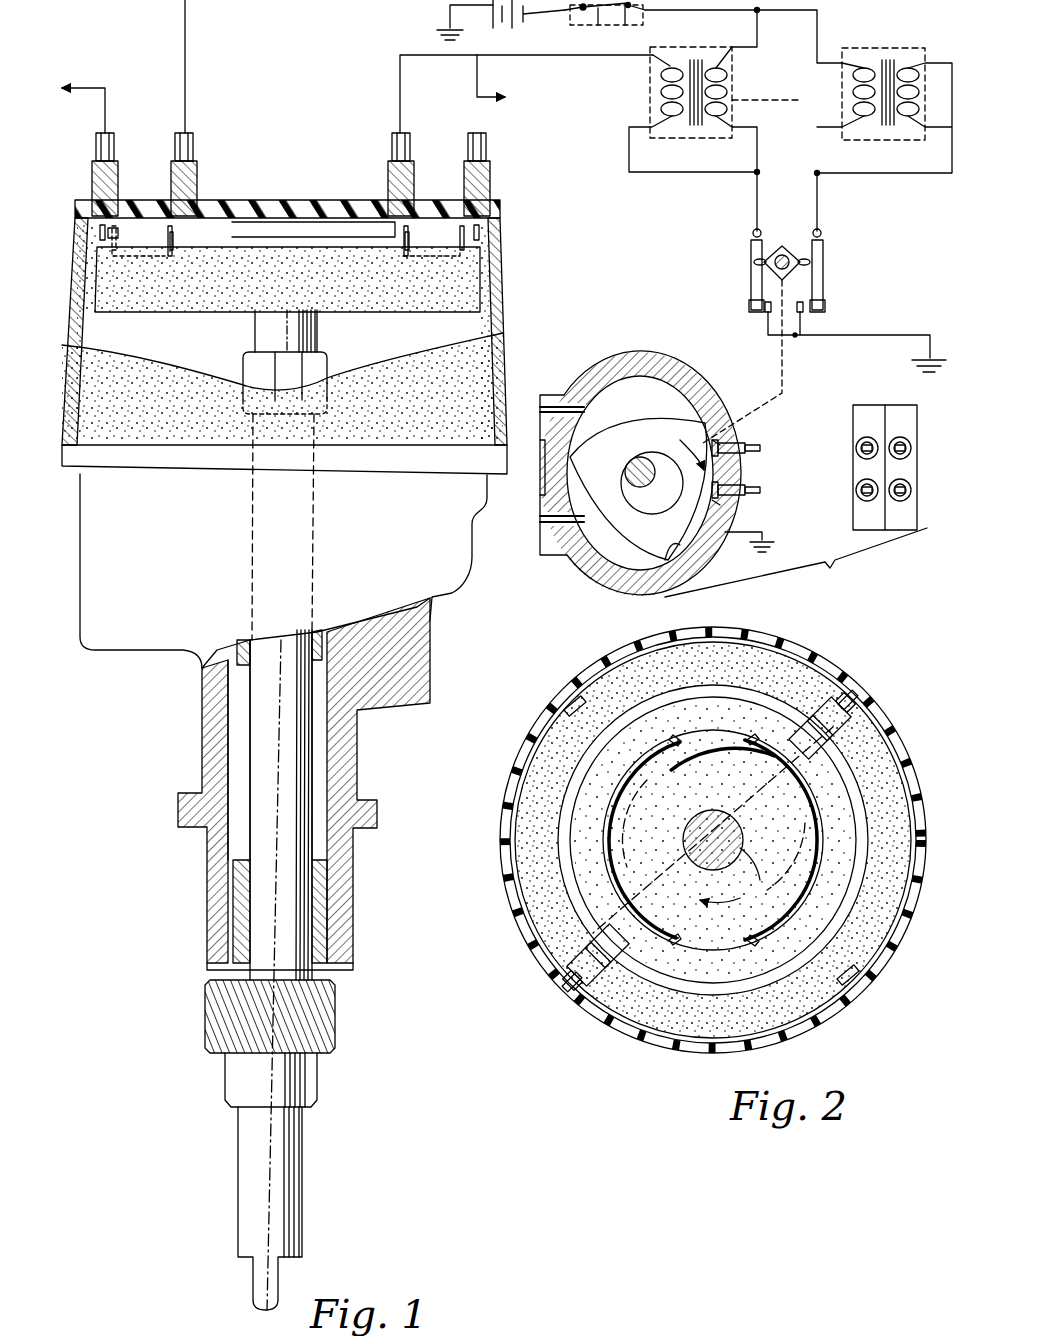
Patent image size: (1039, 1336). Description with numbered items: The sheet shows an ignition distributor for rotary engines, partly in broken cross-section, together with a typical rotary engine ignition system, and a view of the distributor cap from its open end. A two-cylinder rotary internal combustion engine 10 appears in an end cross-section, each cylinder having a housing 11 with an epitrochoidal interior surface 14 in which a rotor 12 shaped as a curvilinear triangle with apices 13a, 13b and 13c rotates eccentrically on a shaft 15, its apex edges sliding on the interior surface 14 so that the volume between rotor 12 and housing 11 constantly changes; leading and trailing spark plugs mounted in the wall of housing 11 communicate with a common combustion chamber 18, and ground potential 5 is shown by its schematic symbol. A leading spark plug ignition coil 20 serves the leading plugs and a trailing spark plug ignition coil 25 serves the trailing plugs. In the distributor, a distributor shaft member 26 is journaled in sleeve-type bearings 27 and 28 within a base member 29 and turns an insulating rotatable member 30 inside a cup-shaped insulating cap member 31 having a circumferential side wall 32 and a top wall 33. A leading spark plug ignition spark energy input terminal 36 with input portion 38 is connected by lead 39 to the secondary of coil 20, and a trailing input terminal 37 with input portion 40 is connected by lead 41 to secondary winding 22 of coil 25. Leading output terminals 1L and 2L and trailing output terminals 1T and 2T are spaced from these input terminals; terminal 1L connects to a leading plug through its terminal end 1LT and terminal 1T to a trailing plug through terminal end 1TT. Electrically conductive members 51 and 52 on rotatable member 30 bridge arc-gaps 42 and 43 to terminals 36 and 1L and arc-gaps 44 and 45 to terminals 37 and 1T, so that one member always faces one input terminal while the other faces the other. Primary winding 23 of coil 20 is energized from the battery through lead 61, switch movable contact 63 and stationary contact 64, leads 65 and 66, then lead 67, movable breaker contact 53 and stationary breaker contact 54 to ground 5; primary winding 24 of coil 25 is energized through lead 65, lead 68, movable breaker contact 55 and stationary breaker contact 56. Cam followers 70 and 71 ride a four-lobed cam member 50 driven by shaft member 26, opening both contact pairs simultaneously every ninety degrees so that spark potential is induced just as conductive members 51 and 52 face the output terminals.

In FIG. 1, the point of reference or ground potential 5 is at (440, 28).
In FIG. 1, the rotary internal combustion engine 10 is at (785, 515).
In FIG. 1, the housing 11 is at (618, 352).
In FIG. 1, the rotor 12 is at (628, 432).
In FIG. 1, the apex 13a is at (700, 425).
In FIG. 1, the apex 13b is at (672, 558).
In FIG. 1, the apex 13c is at (574, 466).
In FIG. 1, the interior surface 14 is at (600, 570).
In FIG. 1, the shaft 15 is at (628, 480).
In FIG. 1, the combustion chamber 18 is at (690, 540).
In FIG. 1, the leading spark plug ignition coil 20 is at (787, 93).
In FIG. 1, the secondary winding 22 is at (662, 94).
In FIG. 1, the primary winding 23 is at (720, 116).
In FIG. 1, the primary winding 24 is at (855, 118).
In FIG. 1, the trailing spark plug ignition coil 25 is at (905, 48).
In FIG. 1, the distributor shaft member 26 is at (265, 757).
In FIG. 2, the distributor shaft member 26 is at (712, 826).
In FIG. 1, the sleeve-type bearing 27 is at (238, 908).
In FIG. 1, the sleeve-type bearing 28 is at (215, 675).
In FIG. 1, the base member 29 is at (442, 582).
In FIG. 1, the rotatable member 30 is at (322, 296).
In FIG. 2, the rotatable member 30 is at (790, 858).
In FIG. 1, the cap member 31 is at (485, 355).
In FIG. 2, the cap member 31 is at (632, 1050).
In FIG. 1, the circumferential side wall 32 is at (500, 275).
In FIG. 2, the circumferential side wall 32 is at (858, 748).
In FIG. 1, the top wall 33 is at (287, 205).
In FIG. 2, the top wall 33 is at (540, 895).
In FIG. 1, the leading spark plug ignition spark energy input terminal 36 is at (392, 228).
In FIG. 2, the leading spark plug ignition spark energy input terminal 36 is at (717, 940).
In FIG. 1, the trailing spark plug ignition spark energy input terminal 37 is at (190, 228).
In FIG. 2, the trailing spark plug ignition spark energy input terminal 37 is at (672, 735).
In FIG. 1, the input portion 38 is at (392, 140).
In FIG. 1, the lead 39 is at (604, 58).
In FIG. 1, the input portion 40 is at (193, 140).
In FIG. 1, the lead 41 is at (252, 66).
In FIG. 1, the arc-gap 42 is at (404, 248).
In FIG. 2, the arc-gap 42 is at (805, 740).
In FIG. 1, the arc-gap 43 is at (456, 263).
In FIG. 2, the arc-gap 43 is at (850, 700).
In FIG. 1, the arc-gap 44 is at (171, 252).
In FIG. 2, the arc-gap 44 is at (640, 935).
In FIG. 1, the arc-gap 45 is at (110, 236).
In FIG. 2, the arc-gap 45 is at (570, 975).
In FIG. 1, the cam member 50 is at (260, 362).
In FIG. 1, the electrically conductive member 51 is at (407, 254).
In FIG. 2, the electrically conductive member 51 is at (845, 745).
In FIG. 1, the electrically conductive member 52 is at (113, 252).
In FIG. 2, the electrically conductive member 52 is at (600, 950).
In FIG. 1, the movable breaker contact 53 is at (752, 305).
In FIG. 1, the stationary breaker contact 54 is at (766, 314).
In FIG. 1, the movable breaker contact 55 is at (822, 306).
In FIG. 1, the stationary breaker contact 56 is at (800, 314).
In FIG. 1, the lead 61 is at (548, 10).
In FIG. 1, the movable contact 63 is at (598, 10).
In FIG. 1, the stationary contact 64 is at (626, 10).
In FIG. 1, the lead 65 is at (668, 10).
In FIG. 1, the lead 66 is at (757, 46).
In FIG. 1, the lead 67 is at (757, 198).
In FIG. 1, the lead 68 is at (818, 210).
In FIG. 1, the cam follower 70 is at (754, 266).
In FIG. 1, the cam follower 71 is at (808, 266).
In FIG. 1, the trailing spark plug output terminal 1T is at (95, 215).
In FIG. 2, the trailing spark plug output terminal 1T is at (585, 968).
In FIG. 1, the leading spark plug output terminal 1L is at (495, 228).
In FIG. 2, the leading spark plug output terminal 1L is at (836, 707).
In FIG. 1, the terminal end 1TT is at (96, 140).
In FIG. 1, the terminal end 1LT is at (486, 145).
In FIG. 2, the trailing spark plug output terminal 2T is at (565, 705).
In FIG. 2, the leading spark plug output terminal 2L is at (852, 975).